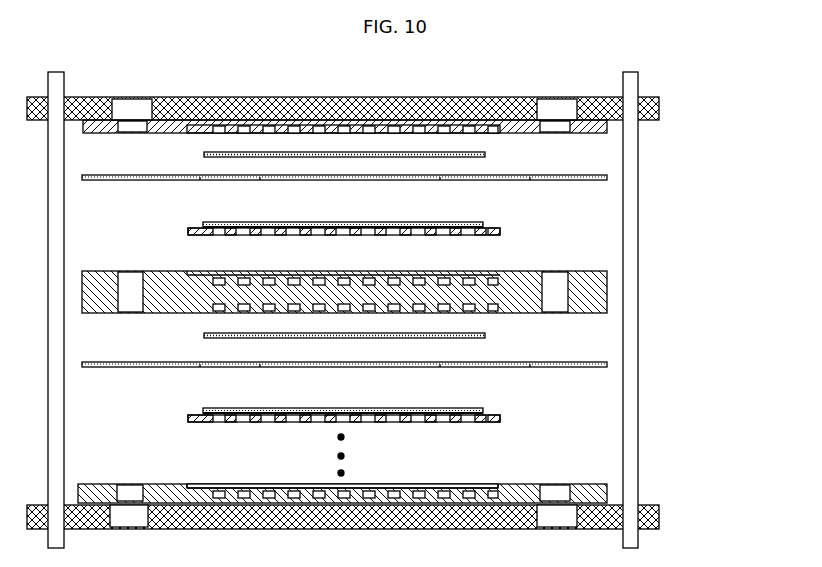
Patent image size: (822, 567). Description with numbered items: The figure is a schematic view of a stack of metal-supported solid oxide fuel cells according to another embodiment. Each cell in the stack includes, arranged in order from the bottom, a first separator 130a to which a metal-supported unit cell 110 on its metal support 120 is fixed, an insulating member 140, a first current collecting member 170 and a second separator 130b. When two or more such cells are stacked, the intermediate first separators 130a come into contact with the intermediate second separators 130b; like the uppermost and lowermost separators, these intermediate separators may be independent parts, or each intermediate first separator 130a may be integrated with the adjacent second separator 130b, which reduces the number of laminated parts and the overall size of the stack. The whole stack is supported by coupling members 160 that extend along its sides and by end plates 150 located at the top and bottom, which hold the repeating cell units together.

The unit cell 110 is at (200, 221).
The metal support 120 is at (185, 232).
The first separator 130a is at (612, 290).
The second separator 130b is at (612, 125).
The insulating member 140 is at (612, 180).
The end plate 150 is at (665, 102).
The coupling member 160 is at (642, 412).
The first current collecting member 170 is at (490, 157).